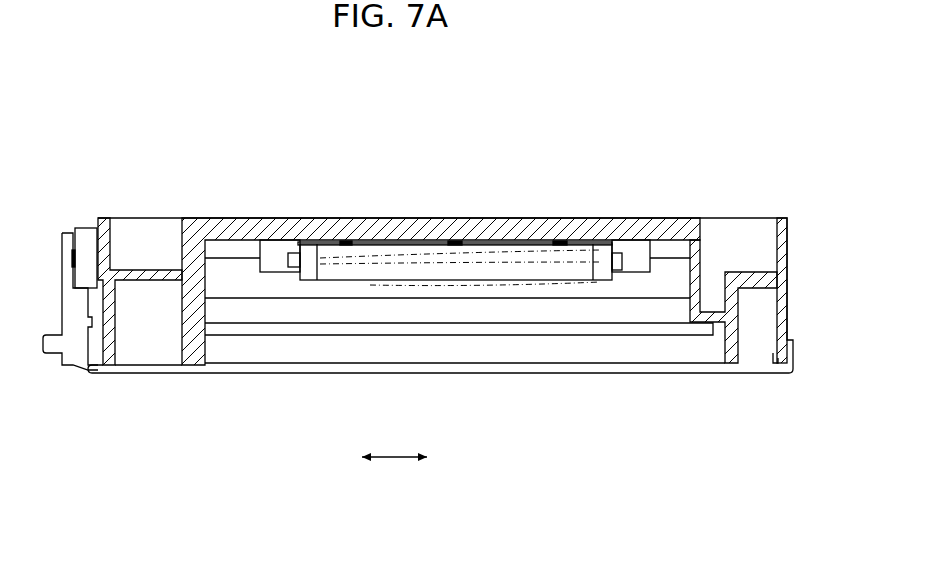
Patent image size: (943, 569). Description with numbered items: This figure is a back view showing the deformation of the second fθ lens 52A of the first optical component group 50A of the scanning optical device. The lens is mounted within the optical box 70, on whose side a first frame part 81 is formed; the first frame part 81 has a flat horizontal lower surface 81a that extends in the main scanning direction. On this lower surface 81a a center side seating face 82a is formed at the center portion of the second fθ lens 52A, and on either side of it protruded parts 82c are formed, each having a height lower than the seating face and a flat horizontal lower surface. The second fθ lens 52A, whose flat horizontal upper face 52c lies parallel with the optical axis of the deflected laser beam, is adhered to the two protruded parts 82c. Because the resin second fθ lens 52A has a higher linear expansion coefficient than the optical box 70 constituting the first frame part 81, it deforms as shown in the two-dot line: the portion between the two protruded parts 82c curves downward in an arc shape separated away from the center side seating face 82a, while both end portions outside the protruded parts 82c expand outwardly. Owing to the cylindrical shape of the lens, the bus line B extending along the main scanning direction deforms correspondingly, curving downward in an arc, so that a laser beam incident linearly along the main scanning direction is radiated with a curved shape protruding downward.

The optical box 70 is at (146, 215).
The first optical component group 50A is at (206, 154).
The first frame part 81 is at (230, 233).
The lower surface 81a is at (272, 240).
The center side seating face 82a is at (453, 242).
The protruded part 82c is at (345, 242).
The second fθ lens 52A is at (330, 280).
The upper face 52c is at (403, 263).
The bus line B is at (480, 267).